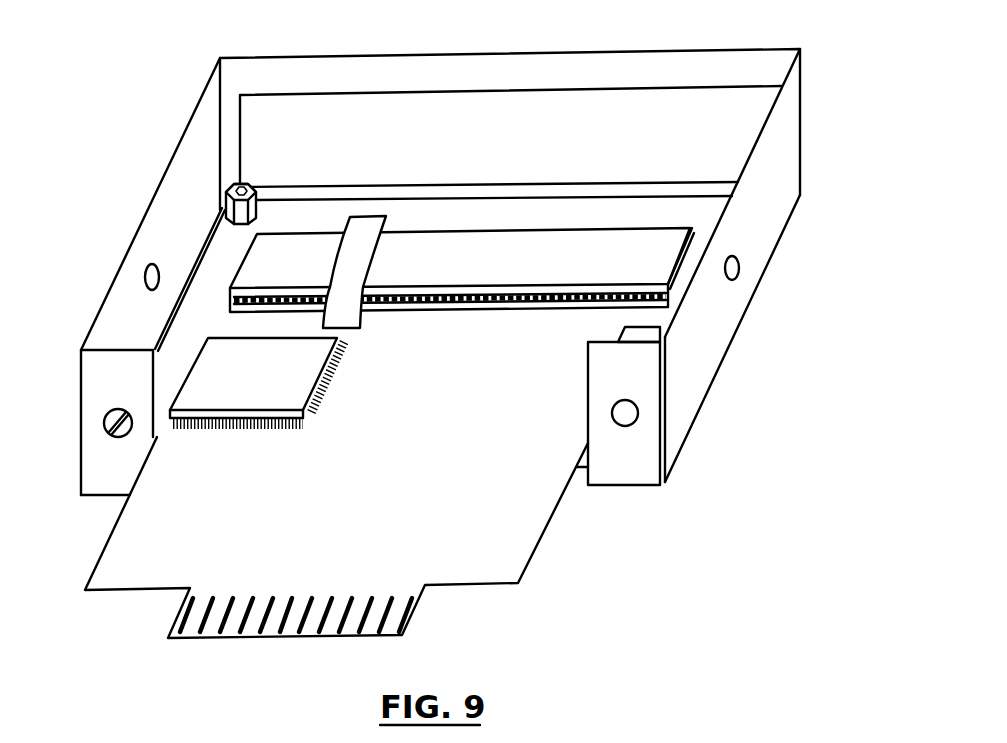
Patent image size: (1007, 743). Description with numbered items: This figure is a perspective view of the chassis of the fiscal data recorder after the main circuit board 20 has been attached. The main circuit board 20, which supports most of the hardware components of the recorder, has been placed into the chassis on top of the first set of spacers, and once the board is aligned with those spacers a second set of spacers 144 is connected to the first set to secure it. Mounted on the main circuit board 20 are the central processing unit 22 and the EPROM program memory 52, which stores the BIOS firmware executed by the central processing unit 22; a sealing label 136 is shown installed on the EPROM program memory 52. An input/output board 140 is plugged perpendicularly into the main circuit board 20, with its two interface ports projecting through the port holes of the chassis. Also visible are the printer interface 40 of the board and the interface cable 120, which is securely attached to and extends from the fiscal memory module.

The main circuit board 20 is at (350, 512).
The central processing unit 22 is at (266, 387).
The printer interface 40 is at (170, 620).
The EPROM program memory 52 is at (455, 274).
The interface cable 120 is at (652, 330).
The sealing label 136 is at (350, 263).
The input/output board 140 is at (389, 158).
The second set of spacers 144 is at (238, 187).